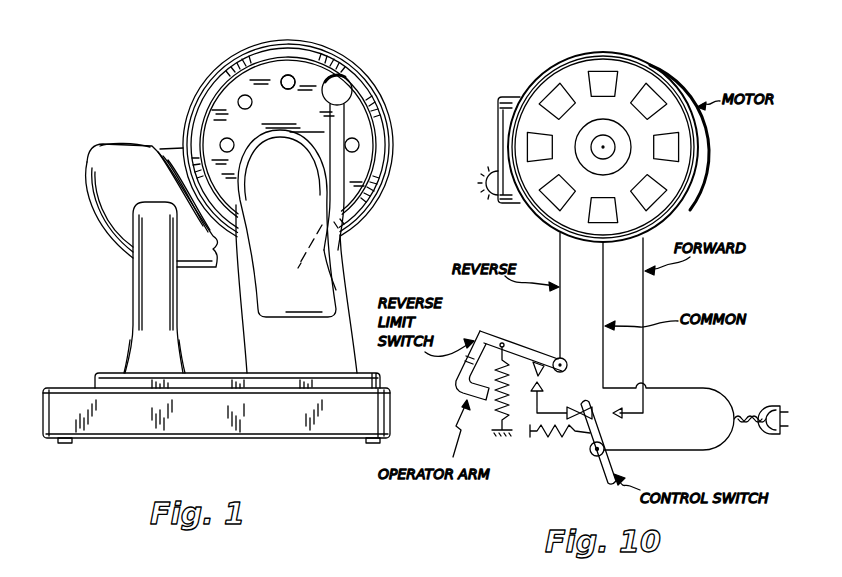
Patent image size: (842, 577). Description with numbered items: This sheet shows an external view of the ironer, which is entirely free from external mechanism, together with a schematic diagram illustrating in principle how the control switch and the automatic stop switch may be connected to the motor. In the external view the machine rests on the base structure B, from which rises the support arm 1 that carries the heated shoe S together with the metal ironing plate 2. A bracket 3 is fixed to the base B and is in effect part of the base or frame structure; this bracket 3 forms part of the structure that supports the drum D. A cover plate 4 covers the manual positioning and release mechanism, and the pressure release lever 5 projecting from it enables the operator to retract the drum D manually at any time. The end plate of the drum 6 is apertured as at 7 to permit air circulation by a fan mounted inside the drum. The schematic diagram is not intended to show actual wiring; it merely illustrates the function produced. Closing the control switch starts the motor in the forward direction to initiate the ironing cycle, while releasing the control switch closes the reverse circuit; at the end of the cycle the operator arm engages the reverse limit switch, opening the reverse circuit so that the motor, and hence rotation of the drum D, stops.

The heated shoe S is at (79, 184).
The drum D is at (216, 66).
The metal ironing plate 2 is at (160, 148).
The aperture 7 is at (298, 76).
The pressure release lever 5 is at (346, 120).
The end plate of the drum 6 is at (298, 120).
The cover plate 4 is at (290, 212).
The support arm 1 is at (147, 318).
The bracket 3 is at (312, 356).
The base structure B is at (207, 426).